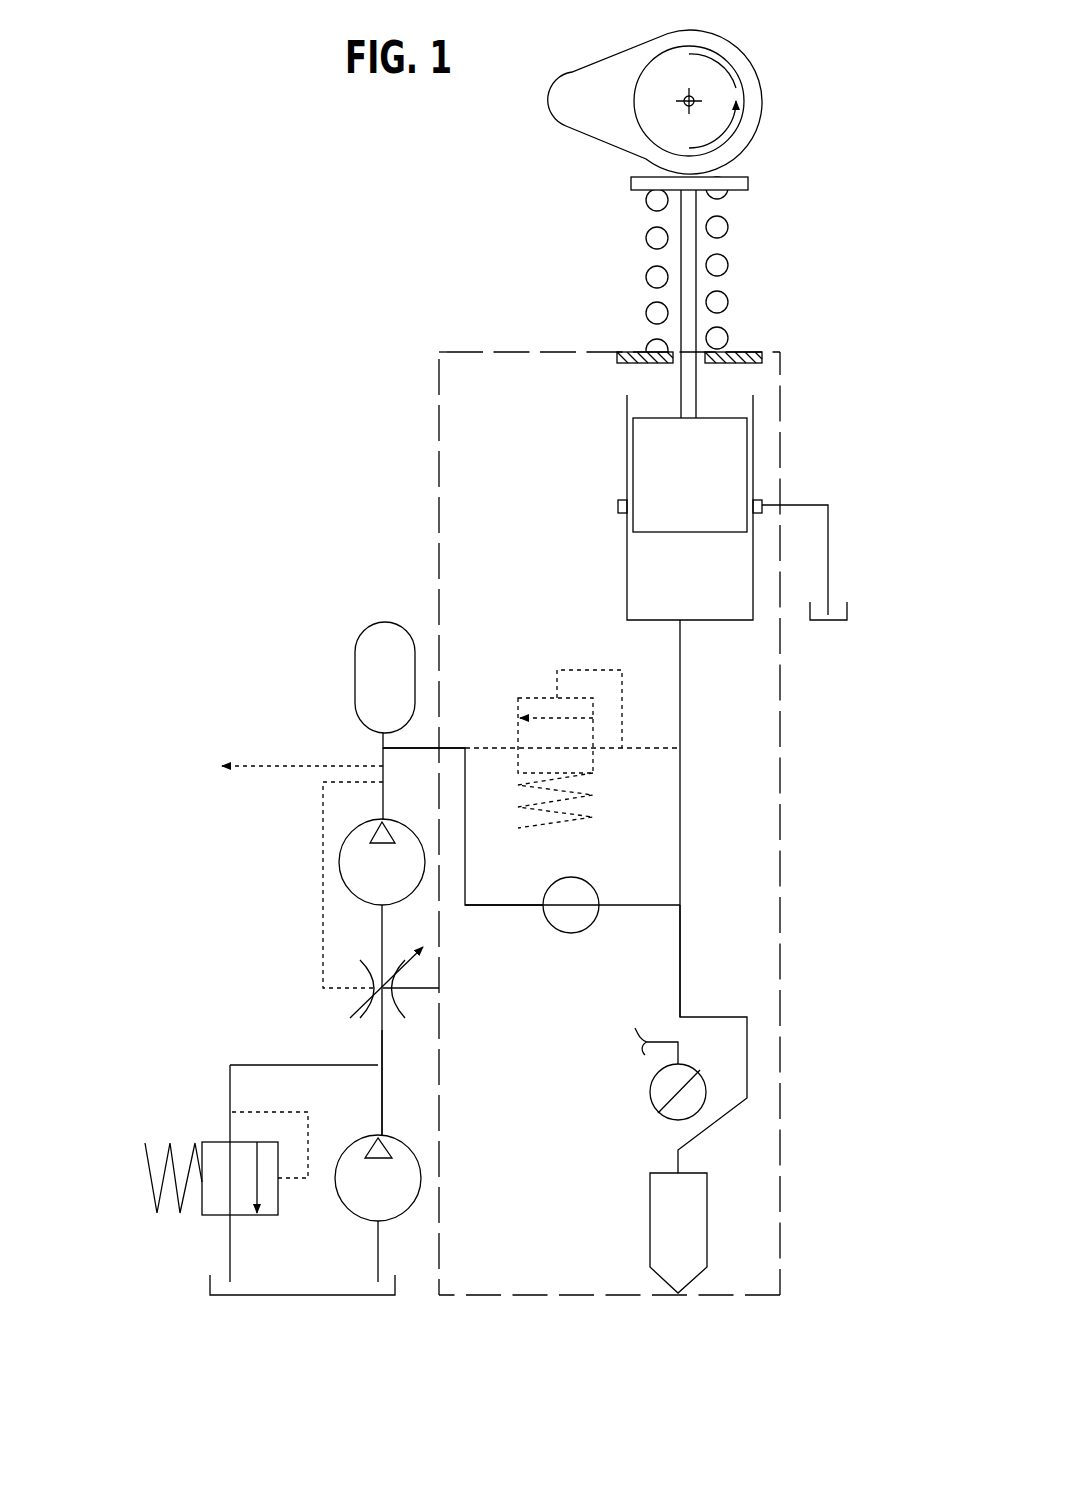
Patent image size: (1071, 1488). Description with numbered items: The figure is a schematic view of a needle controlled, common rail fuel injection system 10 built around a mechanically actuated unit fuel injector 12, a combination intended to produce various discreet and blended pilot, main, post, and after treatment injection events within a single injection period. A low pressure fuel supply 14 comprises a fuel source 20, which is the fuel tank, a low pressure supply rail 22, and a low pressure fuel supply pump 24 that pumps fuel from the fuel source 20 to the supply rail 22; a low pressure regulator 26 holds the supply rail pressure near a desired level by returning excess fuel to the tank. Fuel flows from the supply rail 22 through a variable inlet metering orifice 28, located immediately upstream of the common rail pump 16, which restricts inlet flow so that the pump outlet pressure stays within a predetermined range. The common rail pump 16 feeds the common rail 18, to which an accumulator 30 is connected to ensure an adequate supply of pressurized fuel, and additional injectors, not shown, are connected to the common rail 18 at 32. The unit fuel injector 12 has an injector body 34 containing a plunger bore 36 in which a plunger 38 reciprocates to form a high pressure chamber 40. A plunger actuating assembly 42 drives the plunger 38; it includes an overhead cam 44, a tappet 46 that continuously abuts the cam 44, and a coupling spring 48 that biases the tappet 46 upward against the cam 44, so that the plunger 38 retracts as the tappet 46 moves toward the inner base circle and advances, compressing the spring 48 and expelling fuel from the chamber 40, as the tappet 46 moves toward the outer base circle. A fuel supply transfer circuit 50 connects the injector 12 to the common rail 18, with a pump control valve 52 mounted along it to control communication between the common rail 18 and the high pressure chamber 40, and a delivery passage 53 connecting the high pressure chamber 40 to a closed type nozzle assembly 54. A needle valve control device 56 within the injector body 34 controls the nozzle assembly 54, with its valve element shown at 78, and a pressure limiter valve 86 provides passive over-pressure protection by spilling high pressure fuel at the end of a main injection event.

The fuel injection system 10 is at (877, 143).
The unit fuel injector 12 is at (785, 425).
The low pressure fuel supply 14 is at (398, 1245).
The common rail pump 16 is at (340, 878).
The common rail 18 is at (380, 756).
The fuel source 20 is at (342, 1295).
The low pressure supply rail 22 is at (378, 1045).
The low pressure fuel supply pump 24 is at (343, 1205).
The low pressure regulator 26 is at (195, 1217).
The variable inlet metering orifice 28 is at (345, 1008).
The accumulator 30 is at (373, 622).
The connection point for additional fuel injectors 32 is at (237, 770).
The injector body 34 is at (436, 435).
The plunger bore 36 is at (628, 467).
The plunger 38 is at (715, 460).
The high pressure chamber 40 is at (717, 603).
The plunger actuating assembly 42 is at (780, 88).
The overhead cam 44 is at (598, 68).
The tappet 46 is at (753, 183).
The coupling spring 48 is at (713, 263).
The fuel supply transfer circuit 50 is at (508, 908).
The pump control valve 52 is at (568, 933).
The delivery passage 53 is at (680, 932).
The nozzle assembly 54 is at (707, 1217).
The needle valve control device 56 is at (650, 1125).
The control valve member 78 is at (650, 1090).
The pressure limiter valve 86 is at (530, 698).